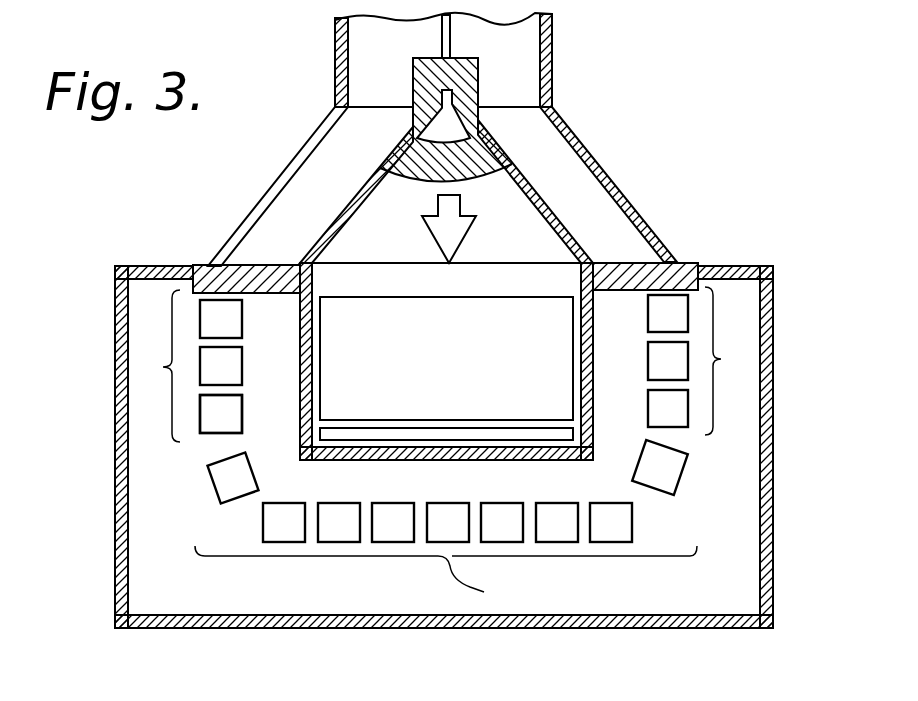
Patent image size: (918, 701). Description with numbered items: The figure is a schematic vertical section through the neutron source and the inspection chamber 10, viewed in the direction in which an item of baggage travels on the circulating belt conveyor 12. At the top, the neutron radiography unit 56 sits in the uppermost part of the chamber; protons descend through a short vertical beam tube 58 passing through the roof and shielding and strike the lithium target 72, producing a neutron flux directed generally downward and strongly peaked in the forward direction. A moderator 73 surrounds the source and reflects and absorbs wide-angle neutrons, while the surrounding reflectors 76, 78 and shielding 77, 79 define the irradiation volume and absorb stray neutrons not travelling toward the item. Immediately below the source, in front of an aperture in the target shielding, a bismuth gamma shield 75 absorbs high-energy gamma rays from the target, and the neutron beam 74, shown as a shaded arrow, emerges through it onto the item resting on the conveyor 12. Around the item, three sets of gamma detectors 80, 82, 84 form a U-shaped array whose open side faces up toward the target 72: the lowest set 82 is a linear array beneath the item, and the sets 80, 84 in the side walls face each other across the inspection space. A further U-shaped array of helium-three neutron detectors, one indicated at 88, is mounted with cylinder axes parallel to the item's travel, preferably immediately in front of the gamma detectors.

The inspection chamber 10 is at (348, 284).
The circulating belt conveyor 12 is at (517, 430).
The neutron radiography unit 56 is at (372, 137).
The vertical beam tube 58 is at (442, 33).
The lithium target 72 is at (455, 108).
The moderator 73 is at (480, 79).
The neutron beam 74 is at (462, 232).
The bismuth gamma shield 75 is at (408, 185).
The reflector 76 is at (362, 188).
The shielding 77 is at (265, 232).
The reflector 78 is at (773, 500).
The shielding 79 is at (128, 481).
The gamma detector array 80 is at (163, 367).
The gamma detector array 82 is at (446, 525).
The gamma detector array 84 is at (720, 359).
The neutron detector 88 is at (300, 395).